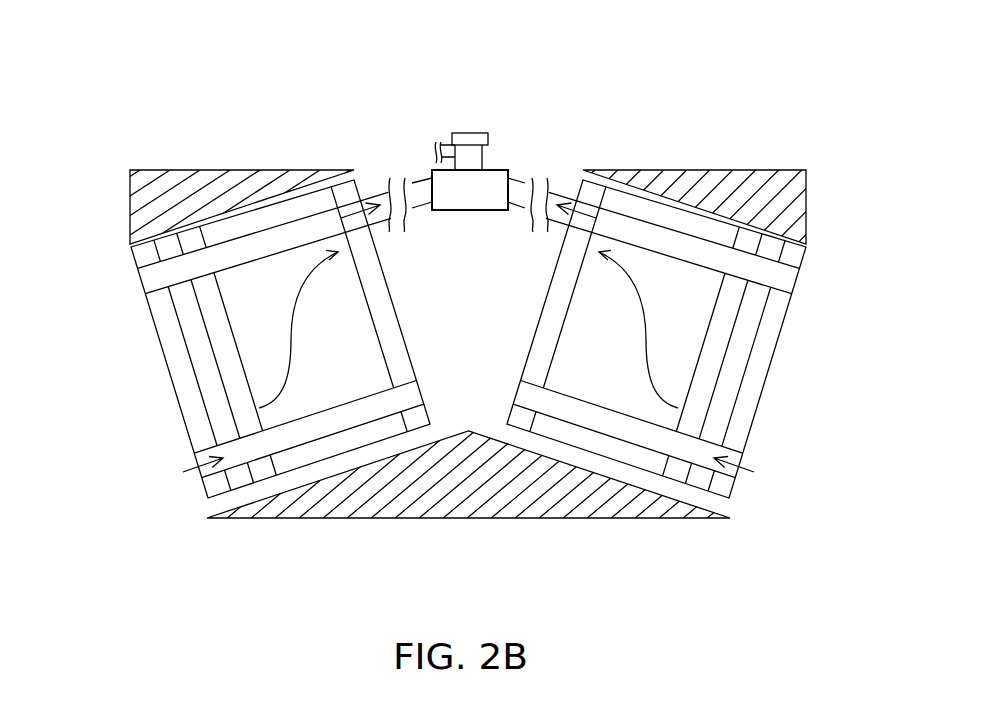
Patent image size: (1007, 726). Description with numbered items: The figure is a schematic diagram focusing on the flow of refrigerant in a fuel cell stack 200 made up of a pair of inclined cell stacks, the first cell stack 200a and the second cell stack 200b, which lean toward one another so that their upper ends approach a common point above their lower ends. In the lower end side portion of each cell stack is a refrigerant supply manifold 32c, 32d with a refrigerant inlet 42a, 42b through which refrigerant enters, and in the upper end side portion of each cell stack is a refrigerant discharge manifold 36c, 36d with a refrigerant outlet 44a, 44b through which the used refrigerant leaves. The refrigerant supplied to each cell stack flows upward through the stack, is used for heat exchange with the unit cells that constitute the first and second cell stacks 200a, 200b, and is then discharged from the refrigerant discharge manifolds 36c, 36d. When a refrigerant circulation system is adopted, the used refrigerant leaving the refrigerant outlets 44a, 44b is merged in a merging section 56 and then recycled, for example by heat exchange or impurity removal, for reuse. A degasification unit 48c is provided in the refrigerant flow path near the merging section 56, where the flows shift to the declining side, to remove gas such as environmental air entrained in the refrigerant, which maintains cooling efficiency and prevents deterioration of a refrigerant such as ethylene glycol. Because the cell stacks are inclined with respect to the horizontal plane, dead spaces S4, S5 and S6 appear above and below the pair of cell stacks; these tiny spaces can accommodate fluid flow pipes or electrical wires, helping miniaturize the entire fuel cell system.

The fuel cell stack 200 is at (271, 95).
The first cell stack 200a is at (243, 213).
The second cell stack 200b is at (655, 203).
The space S4 is at (173, 178).
The space S5 is at (730, 176).
The space S6 is at (382, 512).
The refrigerant discharge manifold 36c is at (320, 223).
The refrigerant discharge manifold 36d is at (613, 222).
The refrigerant supply manifold 32c is at (236, 452).
The refrigerant supply manifold 32d is at (700, 452).
The refrigerant inlet 42a is at (185, 472).
The refrigerant inlet 42b is at (752, 472).
The refrigerant outlet 44a is at (374, 190).
The refrigerant outlet 44b is at (578, 190).
The degasification unit 48c is at (472, 133).
The merging section 56 is at (500, 169).